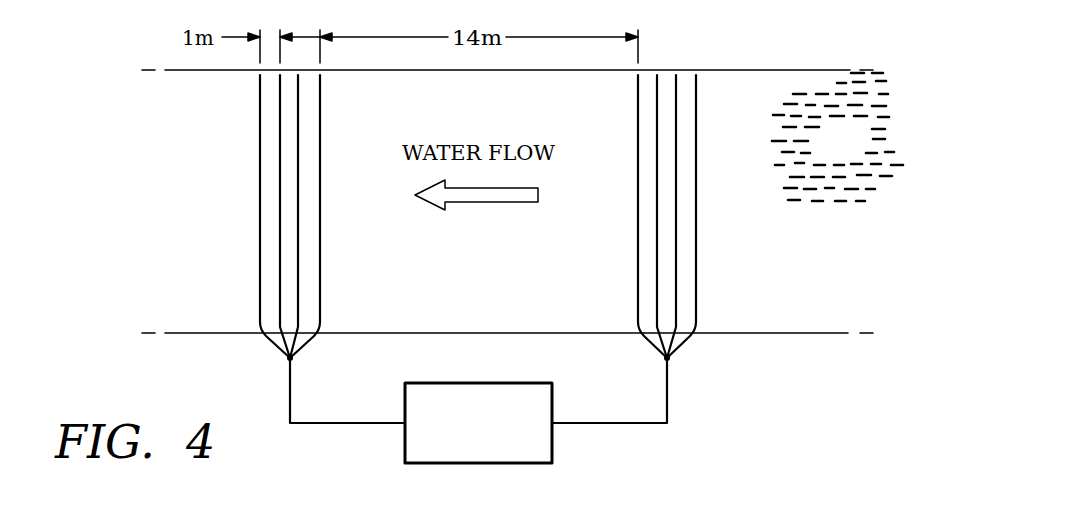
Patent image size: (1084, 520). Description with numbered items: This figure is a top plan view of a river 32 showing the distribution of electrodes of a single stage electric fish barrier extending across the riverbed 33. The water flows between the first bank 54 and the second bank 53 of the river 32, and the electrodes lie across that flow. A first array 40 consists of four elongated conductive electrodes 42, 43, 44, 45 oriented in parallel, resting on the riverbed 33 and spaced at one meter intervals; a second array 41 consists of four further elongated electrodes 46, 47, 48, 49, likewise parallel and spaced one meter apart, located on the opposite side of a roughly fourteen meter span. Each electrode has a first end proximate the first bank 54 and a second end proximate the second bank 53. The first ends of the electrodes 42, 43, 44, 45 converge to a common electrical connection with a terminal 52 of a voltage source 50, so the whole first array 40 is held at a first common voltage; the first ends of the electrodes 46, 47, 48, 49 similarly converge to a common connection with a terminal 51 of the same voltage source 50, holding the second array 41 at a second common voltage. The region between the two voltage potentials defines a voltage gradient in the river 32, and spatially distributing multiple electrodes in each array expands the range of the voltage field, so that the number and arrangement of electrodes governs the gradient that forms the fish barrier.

The river 32 is at (852, 152).
The riverbed 33 is at (852, 298).
The first array 40 is at (206, 218).
The second array 41 is at (750, 218).
The electrode 42 is at (258, 92).
The electrode 43 is at (278, 123).
The electrode 44 is at (297, 152).
The electrode 45 is at (319, 188).
The electrode 46 is at (639, 185).
The electrode 47 is at (658, 148).
The electrode 48 is at (677, 118).
The electrode 49 is at (697, 90).
The voltage source 50 is at (440, 392).
The terminal 51 is at (622, 421).
The terminal 52 is at (334, 421).
The second bank 53 is at (805, 73).
The first bank 54 is at (804, 334).